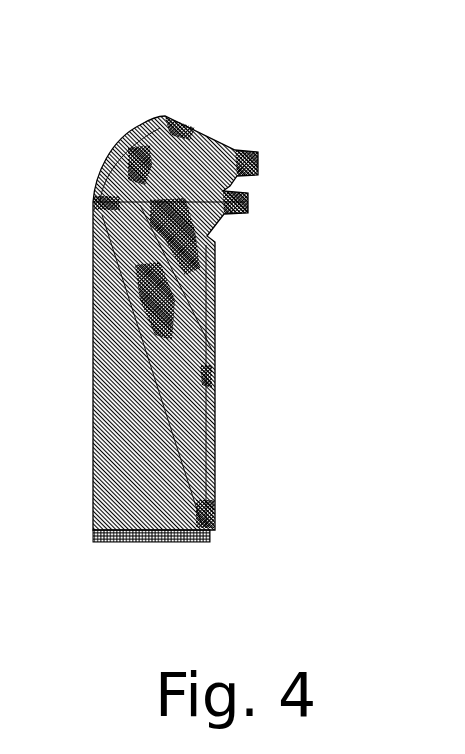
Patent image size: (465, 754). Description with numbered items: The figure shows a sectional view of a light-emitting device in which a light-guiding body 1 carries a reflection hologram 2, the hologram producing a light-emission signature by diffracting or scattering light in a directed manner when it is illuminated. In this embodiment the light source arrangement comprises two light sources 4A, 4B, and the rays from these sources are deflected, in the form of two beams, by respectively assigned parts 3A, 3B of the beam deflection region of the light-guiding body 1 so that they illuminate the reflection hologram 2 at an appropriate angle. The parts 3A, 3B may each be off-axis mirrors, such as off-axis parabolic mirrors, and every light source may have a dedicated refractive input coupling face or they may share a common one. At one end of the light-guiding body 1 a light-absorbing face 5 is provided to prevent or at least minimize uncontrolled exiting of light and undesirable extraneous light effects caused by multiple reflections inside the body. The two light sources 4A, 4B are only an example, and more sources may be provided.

The light-guiding body 1 is at (81, 340).
The reflection hologram 2 is at (226, 404).
The part of the beam deflection region 3A is at (72, 152).
The part of the beam deflection region 3B is at (123, 92).
The light source 4A is at (282, 206).
The light source 4B is at (288, 162).
The face 5 is at (175, 554).